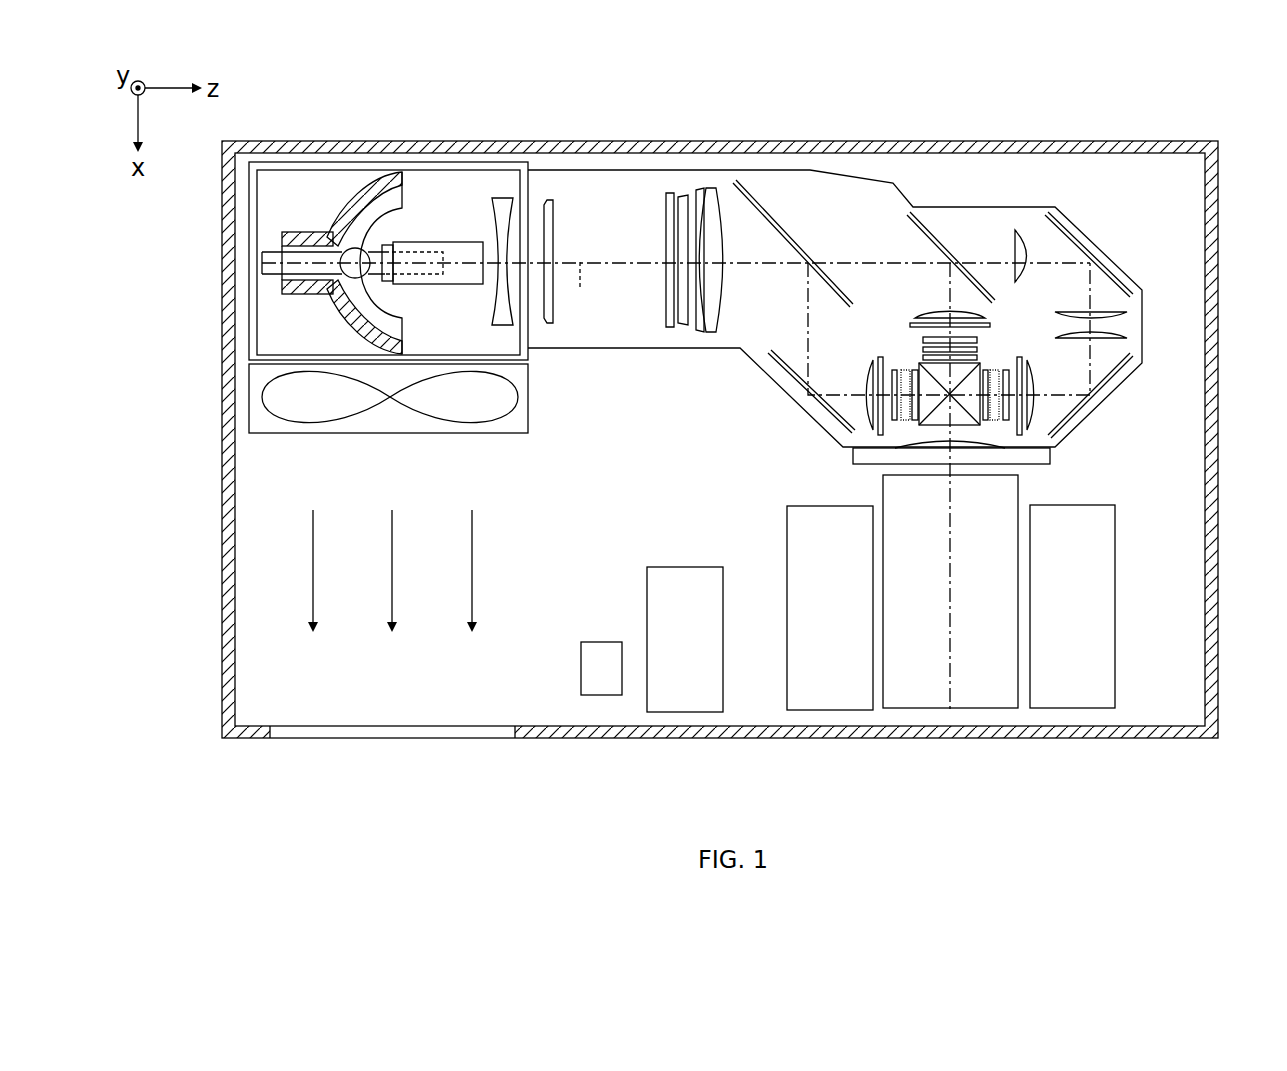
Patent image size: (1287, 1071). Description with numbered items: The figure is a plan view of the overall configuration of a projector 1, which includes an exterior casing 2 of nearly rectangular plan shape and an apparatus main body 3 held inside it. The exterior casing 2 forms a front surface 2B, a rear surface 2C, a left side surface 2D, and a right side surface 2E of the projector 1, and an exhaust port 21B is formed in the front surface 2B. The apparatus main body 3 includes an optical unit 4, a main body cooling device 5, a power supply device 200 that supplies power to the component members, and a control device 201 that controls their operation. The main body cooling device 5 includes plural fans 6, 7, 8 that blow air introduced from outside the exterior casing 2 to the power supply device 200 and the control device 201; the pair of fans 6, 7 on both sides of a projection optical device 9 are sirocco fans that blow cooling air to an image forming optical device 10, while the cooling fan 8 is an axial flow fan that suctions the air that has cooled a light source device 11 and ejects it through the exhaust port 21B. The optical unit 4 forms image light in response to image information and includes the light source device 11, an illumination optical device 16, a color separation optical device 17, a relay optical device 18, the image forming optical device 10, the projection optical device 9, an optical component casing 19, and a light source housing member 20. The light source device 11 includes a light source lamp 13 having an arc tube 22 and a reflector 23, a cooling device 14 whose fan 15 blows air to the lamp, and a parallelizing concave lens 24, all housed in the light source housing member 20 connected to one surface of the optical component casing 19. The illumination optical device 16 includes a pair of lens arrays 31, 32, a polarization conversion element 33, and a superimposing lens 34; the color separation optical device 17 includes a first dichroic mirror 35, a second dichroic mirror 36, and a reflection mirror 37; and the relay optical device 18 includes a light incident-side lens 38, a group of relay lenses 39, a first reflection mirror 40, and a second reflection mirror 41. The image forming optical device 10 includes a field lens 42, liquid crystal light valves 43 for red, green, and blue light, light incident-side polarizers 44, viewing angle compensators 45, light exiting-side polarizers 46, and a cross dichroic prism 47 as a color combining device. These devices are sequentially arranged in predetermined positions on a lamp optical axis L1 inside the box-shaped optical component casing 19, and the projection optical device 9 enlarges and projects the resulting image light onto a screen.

The projector 1 is at (715, 87).
The exterior casing 2 is at (1218, 318).
The front surface 2B is at (775, 737).
The rear surface 2C is at (1148, 147).
The left side surface 2D is at (228, 452).
The right side surface 2E is at (1218, 520).
The exhaust port 21B is at (515, 738).
The apparatus main body 3 is at (648, 452).
The optical unit 4 is at (983, 163).
The main body cooling device 5 is at (726, 537).
The fan 6 is at (1118, 605).
The fan 7 is at (787, 540).
The cooling fan 8 is at (393, 433).
The projection optical device 9 is at (978, 690).
The image forming optical device 10 is at (1037, 305).
The light source device 11 is at (410, 190).
The light source lamp 13 is at (333, 190).
The cooling device 14 is at (428, 225).
The fan 15 is at (462, 245).
The illumination optical device 16 is at (612, 192).
The color separation optical device 17 is at (857, 193).
The relay optical device 18 is at (1128, 262).
The optical component casing 19 is at (717, 350).
The light source housing member 20 is at (487, 162).
The arc tube 22 is at (348, 257).
The reflector 23 is at (375, 220).
The parallelizing concave lens 24 is at (500, 318).
The lens array 31 is at (553, 242).
The lens array 32 is at (668, 300).
The polarization conversion element 33 is at (680, 193).
The superimposing lens 34 is at (710, 193).
The first dichroic mirror 35 is at (783, 230).
The second dichroic mirror 36 is at (928, 230).
The reflection mirror 37 is at (783, 365).
The light incident-side lens 38 is at (1020, 230).
The group of relay lenses 39 is at (1127, 334).
The first reflection mirror 40 is at (1067, 235).
The second reflection mirror 41 is at (1112, 378).
The field lens 42 is at (940, 312).
The liquid crystal light valve 43 is at (1068, 525).
The light incident-side polarizer 44 is at (912, 323).
The viewing angle compensator 45 is at (980, 345).
The light exiting-side polarizer 46 is at (983, 358).
The cross dichroic prism 47 is at (960, 446).
The lamp optical axis L1 is at (583, 294).
The power supply device 200 is at (601, 680).
The control device 201 is at (690, 700).